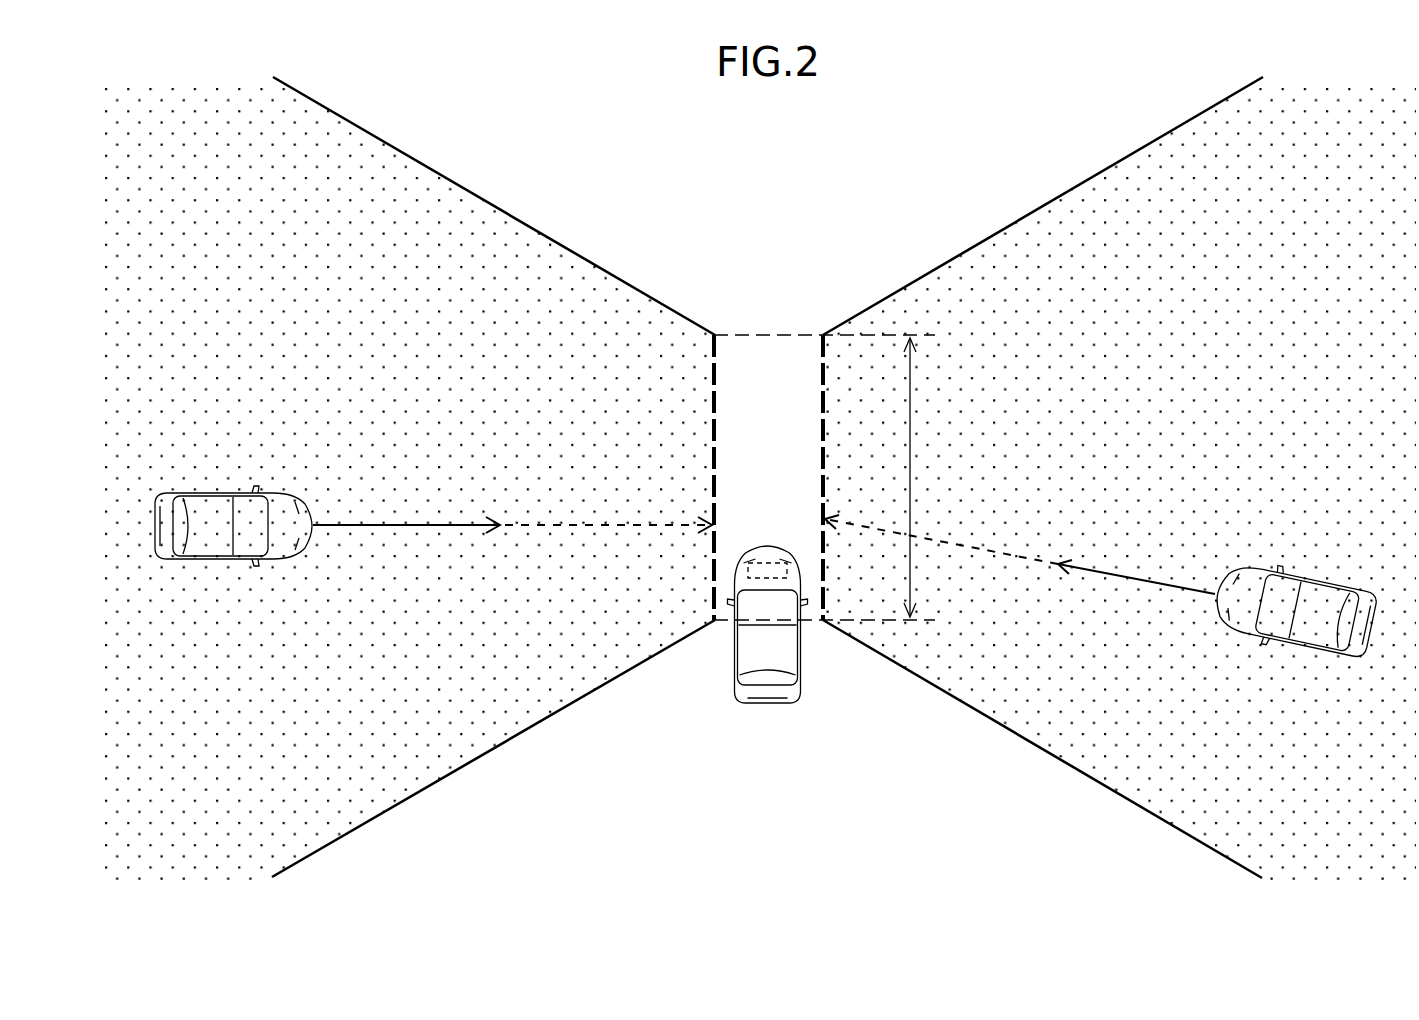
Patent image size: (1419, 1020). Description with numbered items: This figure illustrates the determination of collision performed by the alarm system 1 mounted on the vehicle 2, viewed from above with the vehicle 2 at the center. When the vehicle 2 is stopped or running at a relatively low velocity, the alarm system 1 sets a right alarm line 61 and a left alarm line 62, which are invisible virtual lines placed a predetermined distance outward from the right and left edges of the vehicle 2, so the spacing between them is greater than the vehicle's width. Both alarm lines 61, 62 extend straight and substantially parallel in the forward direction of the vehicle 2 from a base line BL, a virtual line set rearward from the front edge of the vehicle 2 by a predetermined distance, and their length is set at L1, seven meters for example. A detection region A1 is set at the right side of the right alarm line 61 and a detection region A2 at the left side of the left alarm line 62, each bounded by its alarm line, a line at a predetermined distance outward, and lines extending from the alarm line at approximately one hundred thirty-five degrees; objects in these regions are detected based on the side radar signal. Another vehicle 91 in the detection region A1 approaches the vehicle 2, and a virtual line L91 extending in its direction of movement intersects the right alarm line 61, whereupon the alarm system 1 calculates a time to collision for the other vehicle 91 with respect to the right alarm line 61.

The alarm system 1 is at (737, 571).
The vehicle 2 is at (768, 703).
The right alarm line 61 is at (821, 470).
The left alarm line 62 is at (717, 393).
The other vehicle 91 is at (1308, 578).
The length of alarm lines L1 is at (926, 477).
The base line BL is at (900, 623).
The detection region A1 is at (1045, 752).
The detection region A2 is at (491, 756).
The virtual line L91 is at (1032, 556).